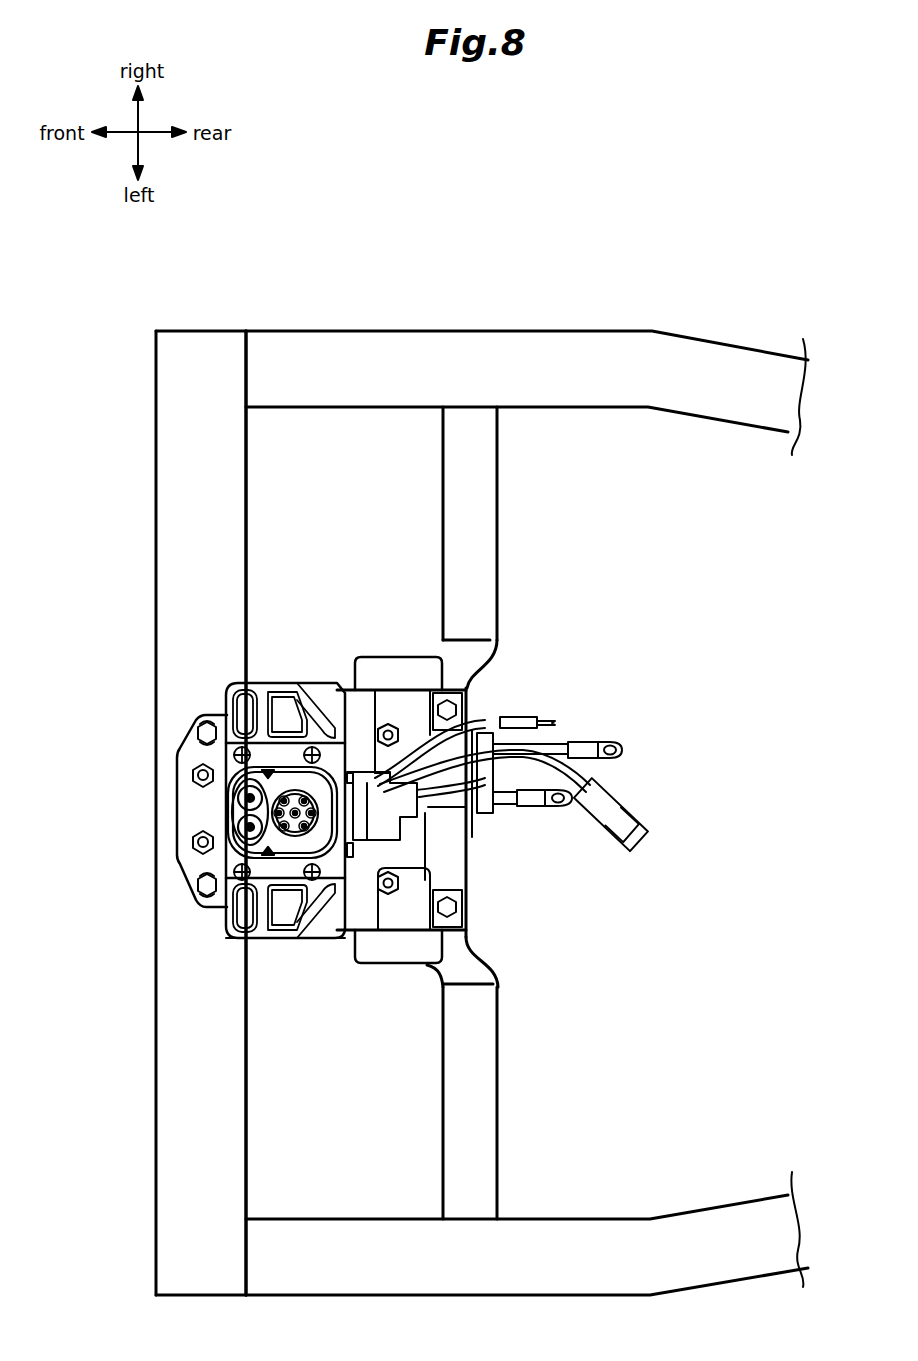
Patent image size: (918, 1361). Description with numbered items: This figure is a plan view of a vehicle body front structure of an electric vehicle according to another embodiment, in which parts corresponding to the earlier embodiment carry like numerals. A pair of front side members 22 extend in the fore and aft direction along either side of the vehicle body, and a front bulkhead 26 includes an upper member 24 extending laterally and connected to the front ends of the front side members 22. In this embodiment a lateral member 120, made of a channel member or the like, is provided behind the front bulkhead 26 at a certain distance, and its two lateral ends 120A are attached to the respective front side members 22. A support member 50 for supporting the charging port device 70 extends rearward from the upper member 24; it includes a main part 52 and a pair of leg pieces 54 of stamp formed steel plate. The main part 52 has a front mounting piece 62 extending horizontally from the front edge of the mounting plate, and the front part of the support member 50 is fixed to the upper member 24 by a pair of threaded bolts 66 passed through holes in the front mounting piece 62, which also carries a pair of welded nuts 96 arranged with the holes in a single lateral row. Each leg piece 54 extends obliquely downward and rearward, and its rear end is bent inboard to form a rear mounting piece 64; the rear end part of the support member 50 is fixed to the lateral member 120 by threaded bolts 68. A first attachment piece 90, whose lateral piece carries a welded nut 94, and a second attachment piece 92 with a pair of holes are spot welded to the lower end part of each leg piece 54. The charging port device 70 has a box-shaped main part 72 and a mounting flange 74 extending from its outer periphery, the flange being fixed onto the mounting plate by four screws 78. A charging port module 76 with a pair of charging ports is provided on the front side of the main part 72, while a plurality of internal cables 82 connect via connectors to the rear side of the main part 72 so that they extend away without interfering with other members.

The front side member 22 is at (357, 340).
The upper member 24 is at (236, 498).
The front bulkhead 26 is at (178, 1122).
The support member 50 is at (230, 682).
The main part 52 is at (282, 940).
The leg piece 54 is at (348, 682).
The front mounting piece 62 is at (190, 822).
The rear mounting piece 64 is at (483, 683).
The threaded bolt 66 is at (200, 728).
The threaded bolt 68 is at (470, 700).
The charging port device 70 is at (282, 750).
The main part 72 is at (366, 825).
The mounting flange 74 is at (238, 930).
The charging port module 76 is at (250, 827).
The screw 78 is at (246, 690).
The internal cable 82 is at (593, 770).
The first attachment piece 90 is at (400, 702).
The second attachment piece 92 is at (412, 672).
The welded nut 94 is at (386, 722).
The welded nut 96 is at (196, 773).
The lateral member 120 is at (490, 1052).
The lateral end 120A is at (490, 430).